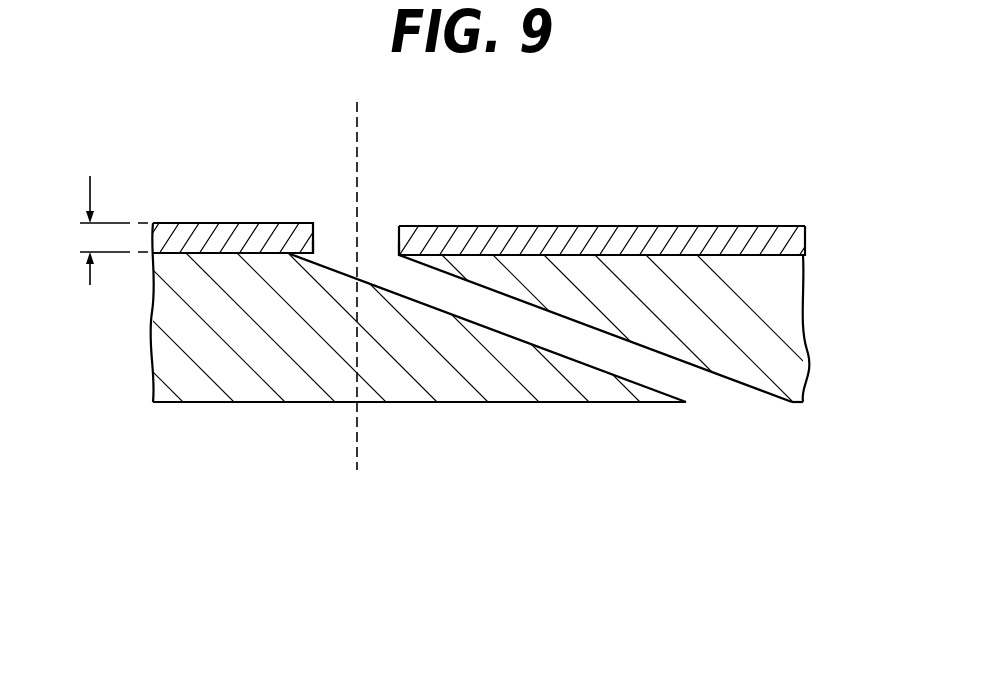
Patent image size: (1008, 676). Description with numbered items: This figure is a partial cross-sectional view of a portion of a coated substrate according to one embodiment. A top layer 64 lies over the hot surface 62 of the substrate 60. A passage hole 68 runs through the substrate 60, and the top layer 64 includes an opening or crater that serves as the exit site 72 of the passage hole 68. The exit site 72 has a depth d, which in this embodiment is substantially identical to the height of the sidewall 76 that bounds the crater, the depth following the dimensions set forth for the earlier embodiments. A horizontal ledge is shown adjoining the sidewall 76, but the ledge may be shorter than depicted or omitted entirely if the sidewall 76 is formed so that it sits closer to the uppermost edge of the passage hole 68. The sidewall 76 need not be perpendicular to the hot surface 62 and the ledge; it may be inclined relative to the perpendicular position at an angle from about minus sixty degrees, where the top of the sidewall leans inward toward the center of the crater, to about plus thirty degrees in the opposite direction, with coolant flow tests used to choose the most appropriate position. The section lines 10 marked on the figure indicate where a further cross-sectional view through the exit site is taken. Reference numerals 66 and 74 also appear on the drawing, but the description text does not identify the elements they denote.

The section line 10 is at (357, 110).
The substrate 60 is at (778, 315).
The hot surface 62 is at (652, 200).
The top layer 64 is at (609, 200).
The outer surface of coating layer 66 is at (672, 227).
The passage hole 68 is at (568, 340).
The exit site 72 is at (383, 232).
The crack exit at bottom surface 74 is at (634, 403).
The sidewall 76 is at (316, 226).
The depth d is at (101, 230).